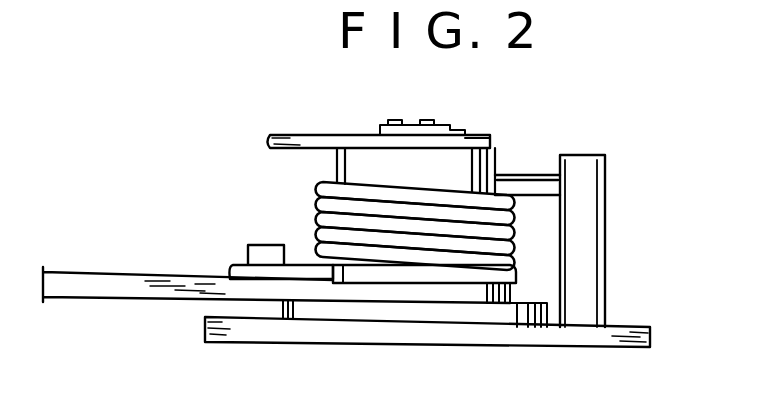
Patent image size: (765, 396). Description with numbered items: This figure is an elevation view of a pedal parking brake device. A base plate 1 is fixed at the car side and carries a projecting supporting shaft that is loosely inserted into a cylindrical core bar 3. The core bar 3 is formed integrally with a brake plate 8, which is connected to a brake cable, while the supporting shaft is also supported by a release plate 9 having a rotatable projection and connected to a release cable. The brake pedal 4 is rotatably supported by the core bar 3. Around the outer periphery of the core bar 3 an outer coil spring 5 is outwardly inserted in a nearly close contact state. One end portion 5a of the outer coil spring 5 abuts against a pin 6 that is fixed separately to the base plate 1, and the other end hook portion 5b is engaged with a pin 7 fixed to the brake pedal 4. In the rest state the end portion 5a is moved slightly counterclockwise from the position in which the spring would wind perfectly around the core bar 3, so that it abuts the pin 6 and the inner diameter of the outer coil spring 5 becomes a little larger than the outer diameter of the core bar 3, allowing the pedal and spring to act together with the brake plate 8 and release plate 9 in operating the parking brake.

The base plate 1 is at (628, 330).
The cylindrical core bar 3 is at (496, 158).
The brake pedal 4 is at (131, 291).
The outer coil spring 5 is at (320, 207).
The end portion of the outer coil spring 5a is at (545, 173).
The end hook portion of the outer coil spring 5b is at (232, 270).
The pin 6 is at (603, 237).
The pin 7 is at (254, 247).
The brake plate 8 is at (522, 310).
The release plate 9 is at (283, 136).